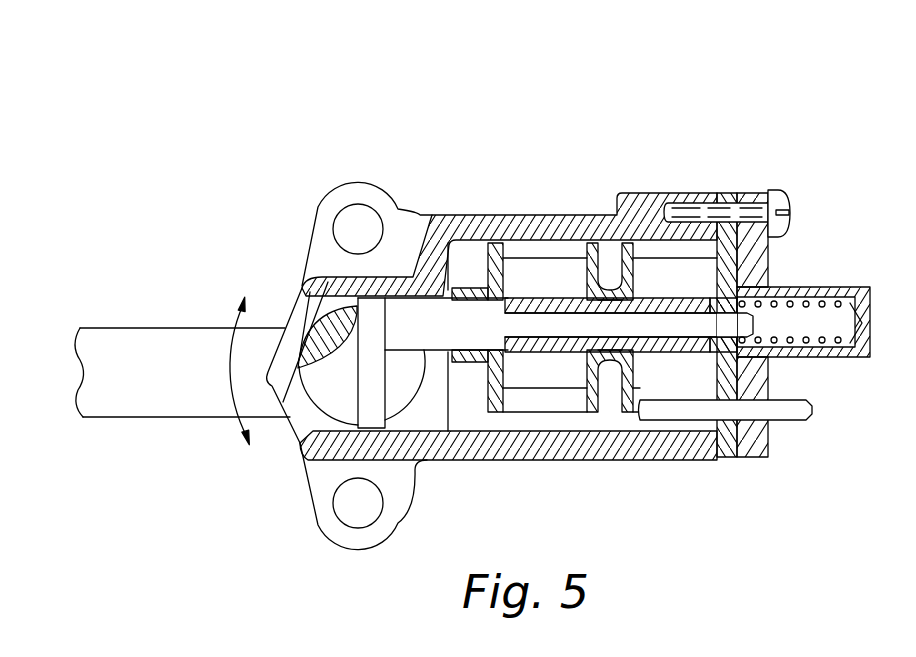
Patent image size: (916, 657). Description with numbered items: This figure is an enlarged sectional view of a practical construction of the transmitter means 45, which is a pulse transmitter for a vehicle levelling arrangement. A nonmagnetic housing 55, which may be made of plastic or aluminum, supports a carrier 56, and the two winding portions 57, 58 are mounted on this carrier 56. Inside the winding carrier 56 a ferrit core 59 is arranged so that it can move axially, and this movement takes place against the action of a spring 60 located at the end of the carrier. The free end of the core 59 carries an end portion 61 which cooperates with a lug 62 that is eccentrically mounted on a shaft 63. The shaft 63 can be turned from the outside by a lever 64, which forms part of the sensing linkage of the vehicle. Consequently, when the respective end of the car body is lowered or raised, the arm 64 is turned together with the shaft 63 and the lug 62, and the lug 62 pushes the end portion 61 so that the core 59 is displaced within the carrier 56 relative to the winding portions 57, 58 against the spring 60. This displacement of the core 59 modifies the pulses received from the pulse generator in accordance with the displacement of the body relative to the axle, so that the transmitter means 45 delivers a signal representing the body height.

The transmitter means 45 is at (539, 124).
The nonmagnetic housing 55 is at (453, 223).
The carrier 56 is at (727, 260).
The winding portion 57 is at (673, 270).
The winding portion 58 is at (553, 270).
The ferrit core 59 is at (572, 340).
The spring 60 is at (810, 338).
The end portion 61 is at (437, 340).
The lug 62 is at (327, 323).
The shaft 63 is at (337, 387).
The lever 64 is at (157, 398).